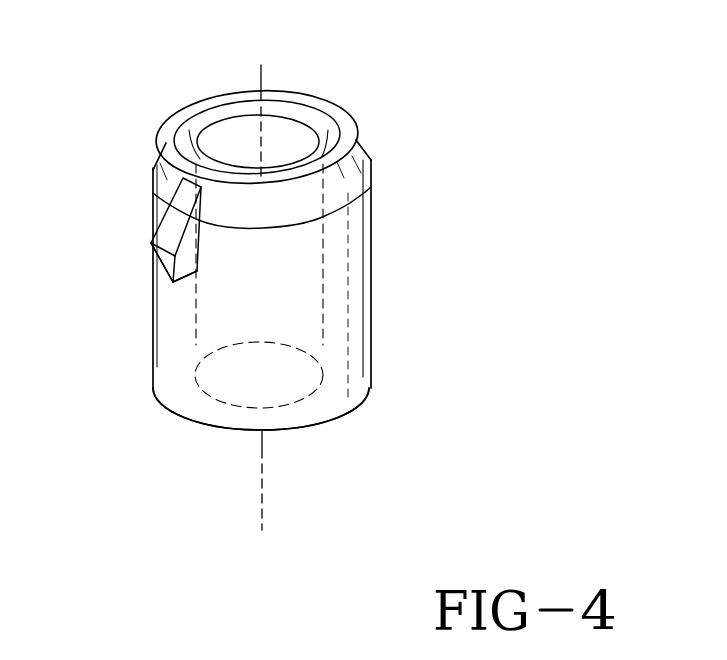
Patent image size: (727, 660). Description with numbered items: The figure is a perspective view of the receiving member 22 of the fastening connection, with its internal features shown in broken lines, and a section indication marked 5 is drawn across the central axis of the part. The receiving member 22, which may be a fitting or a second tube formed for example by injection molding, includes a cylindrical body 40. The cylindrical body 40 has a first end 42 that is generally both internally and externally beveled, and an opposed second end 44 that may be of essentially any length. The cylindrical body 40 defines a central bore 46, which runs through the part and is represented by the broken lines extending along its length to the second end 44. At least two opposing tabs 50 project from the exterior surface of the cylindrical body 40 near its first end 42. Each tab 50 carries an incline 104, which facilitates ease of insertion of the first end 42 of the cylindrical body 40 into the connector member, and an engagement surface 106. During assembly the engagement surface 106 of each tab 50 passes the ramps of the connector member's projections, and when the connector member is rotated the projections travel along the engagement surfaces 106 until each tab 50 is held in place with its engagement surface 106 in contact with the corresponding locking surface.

The receiving member 22 is at (407, 190).
The cylindrical body 40 is at (371, 242).
The first end 42 is at (317, 103).
The second end 44 is at (340, 413).
The central bore 46 is at (207, 145).
The tabs 50 is at (371, 158).
The incline 104 is at (163, 219).
The engagement surface 106 is at (186, 282).
The section line for FIG. 5 is at (273, 85).